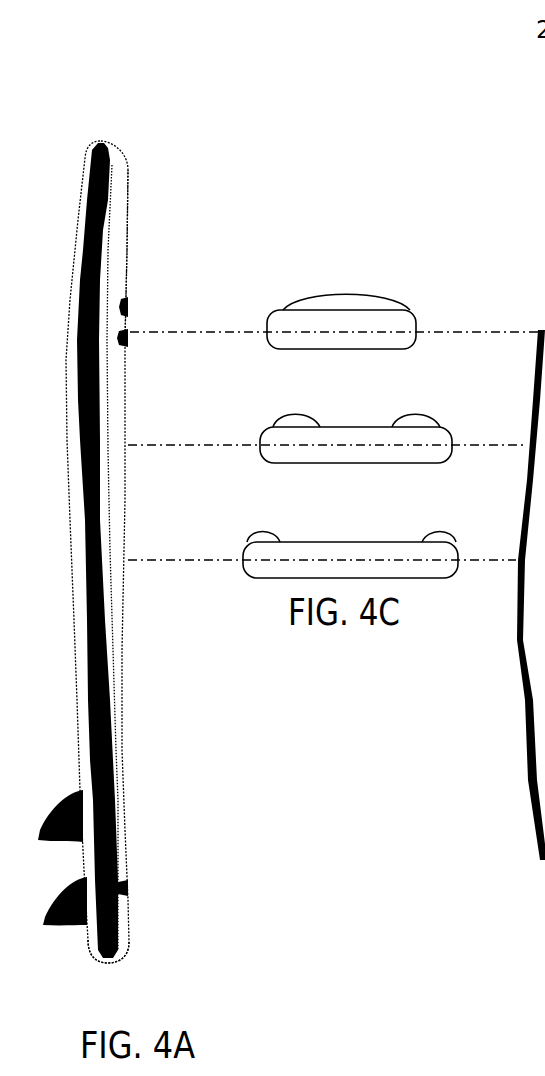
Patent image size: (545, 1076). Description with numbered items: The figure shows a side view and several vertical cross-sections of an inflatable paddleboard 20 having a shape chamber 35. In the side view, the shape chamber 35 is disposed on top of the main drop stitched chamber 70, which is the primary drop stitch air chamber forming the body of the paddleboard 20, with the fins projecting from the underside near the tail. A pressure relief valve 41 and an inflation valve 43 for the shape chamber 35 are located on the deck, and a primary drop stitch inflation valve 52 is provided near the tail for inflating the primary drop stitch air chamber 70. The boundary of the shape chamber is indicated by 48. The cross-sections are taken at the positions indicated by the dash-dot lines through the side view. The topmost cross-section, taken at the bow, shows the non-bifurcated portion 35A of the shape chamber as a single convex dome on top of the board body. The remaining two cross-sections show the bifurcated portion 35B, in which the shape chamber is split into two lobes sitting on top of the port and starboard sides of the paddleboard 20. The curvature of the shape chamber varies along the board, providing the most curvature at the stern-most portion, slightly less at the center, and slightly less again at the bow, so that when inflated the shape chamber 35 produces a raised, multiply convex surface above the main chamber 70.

In FIG. 4A, the paddleboard 20 is at (99, 122).
In FIG. 4A, the shape chamber 35 is at (128, 210).
In FIG. 4C, the non-bifurcated portion of the shape chamber 35A is at (390, 302).
In FIG. 4C, the bifurcated portion of the shape chamber 35B is at (290, 424).
In FIG. 4A, the pressure relief valve 41 is at (128, 304).
In FIG. 4C, the pressure relief valve 41 is at (544, 270).
In FIG. 4A, the inflation valve 43 is at (128, 340).
In FIG. 4C, the inflation valve 43 is at (544, 348).
In FIG. 4C, the boundary of the shape chamber 48 is at (544, 730).
In FIG. 4A, the primary drop stitch inflation valve 52 is at (128, 884).
In FIG. 4A, the main drop stitched chamber 70 is at (128, 948).